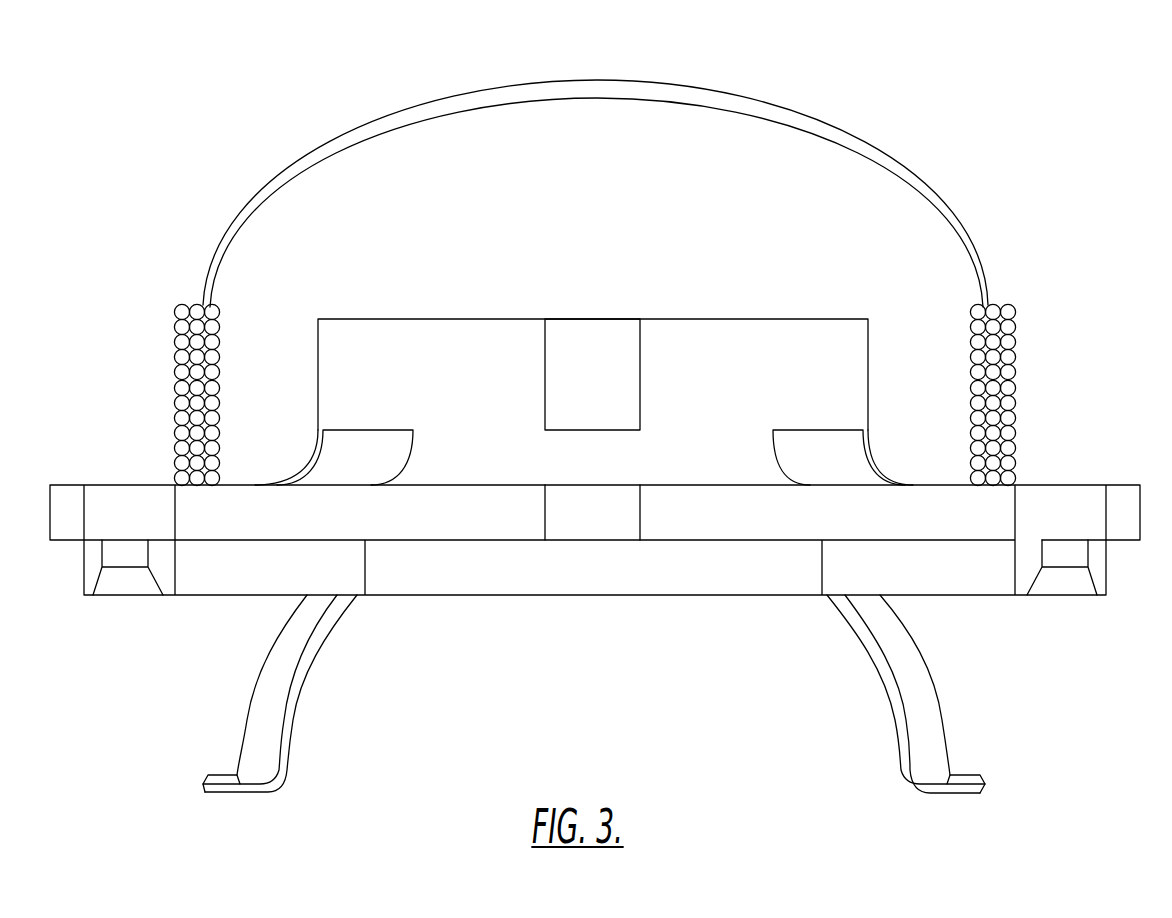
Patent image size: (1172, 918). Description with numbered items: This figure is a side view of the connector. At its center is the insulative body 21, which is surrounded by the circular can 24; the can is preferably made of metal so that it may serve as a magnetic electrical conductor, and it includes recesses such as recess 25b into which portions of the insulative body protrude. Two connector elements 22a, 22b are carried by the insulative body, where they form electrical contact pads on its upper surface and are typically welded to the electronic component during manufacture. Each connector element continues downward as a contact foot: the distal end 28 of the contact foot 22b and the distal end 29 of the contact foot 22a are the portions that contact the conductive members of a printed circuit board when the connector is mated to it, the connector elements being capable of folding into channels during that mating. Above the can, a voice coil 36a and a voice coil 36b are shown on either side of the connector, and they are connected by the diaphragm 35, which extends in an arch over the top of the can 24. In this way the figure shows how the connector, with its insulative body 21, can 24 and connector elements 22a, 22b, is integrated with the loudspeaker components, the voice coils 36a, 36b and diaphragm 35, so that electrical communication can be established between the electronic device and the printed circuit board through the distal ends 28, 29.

The insulative body 21 is at (460, 577).
The connector element 22a is at (925, 718).
The connector element 22b is at (257, 732).
The circular can 24 is at (732, 338).
The recess 25b is at (588, 347).
The distal end 28 is at (210, 780).
The distal end 29 is at (928, 790).
The diaphragm 35 is at (652, 82).
The voice coil 36a is at (178, 388).
The voice coil 36b is at (1005, 387).